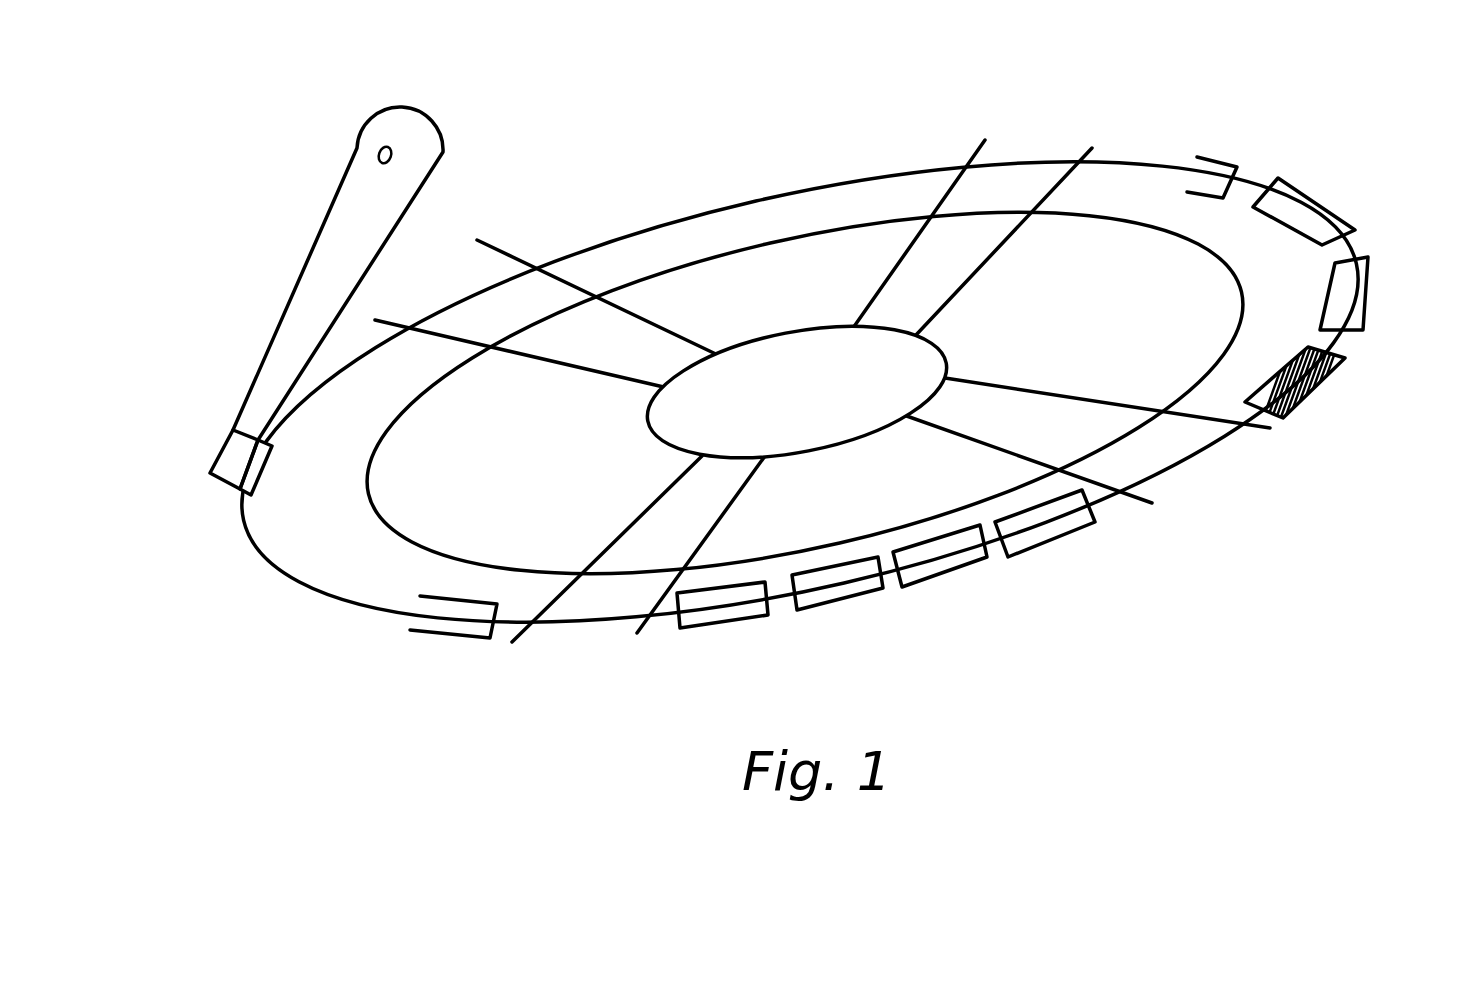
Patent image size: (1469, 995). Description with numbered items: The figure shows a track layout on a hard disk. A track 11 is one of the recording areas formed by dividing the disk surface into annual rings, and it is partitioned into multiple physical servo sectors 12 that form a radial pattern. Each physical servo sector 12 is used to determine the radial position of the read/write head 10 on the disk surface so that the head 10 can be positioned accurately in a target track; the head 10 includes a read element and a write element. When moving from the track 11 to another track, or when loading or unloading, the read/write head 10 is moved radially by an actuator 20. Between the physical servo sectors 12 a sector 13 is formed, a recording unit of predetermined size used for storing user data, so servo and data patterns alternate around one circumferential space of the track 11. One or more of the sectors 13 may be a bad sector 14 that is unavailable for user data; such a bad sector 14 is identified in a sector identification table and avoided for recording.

The read/write head 10 is at (215, 448).
The track 11 is at (238, 522).
The physical servo sector 12 is at (1060, 107).
The sector 13 is at (768, 617).
The bad sector 14 is at (1343, 367).
The actuator 20 is at (285, 292).